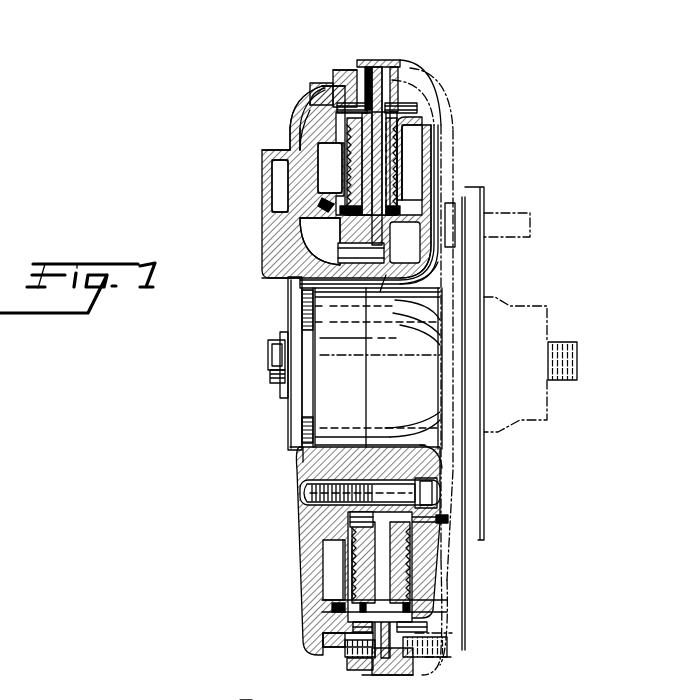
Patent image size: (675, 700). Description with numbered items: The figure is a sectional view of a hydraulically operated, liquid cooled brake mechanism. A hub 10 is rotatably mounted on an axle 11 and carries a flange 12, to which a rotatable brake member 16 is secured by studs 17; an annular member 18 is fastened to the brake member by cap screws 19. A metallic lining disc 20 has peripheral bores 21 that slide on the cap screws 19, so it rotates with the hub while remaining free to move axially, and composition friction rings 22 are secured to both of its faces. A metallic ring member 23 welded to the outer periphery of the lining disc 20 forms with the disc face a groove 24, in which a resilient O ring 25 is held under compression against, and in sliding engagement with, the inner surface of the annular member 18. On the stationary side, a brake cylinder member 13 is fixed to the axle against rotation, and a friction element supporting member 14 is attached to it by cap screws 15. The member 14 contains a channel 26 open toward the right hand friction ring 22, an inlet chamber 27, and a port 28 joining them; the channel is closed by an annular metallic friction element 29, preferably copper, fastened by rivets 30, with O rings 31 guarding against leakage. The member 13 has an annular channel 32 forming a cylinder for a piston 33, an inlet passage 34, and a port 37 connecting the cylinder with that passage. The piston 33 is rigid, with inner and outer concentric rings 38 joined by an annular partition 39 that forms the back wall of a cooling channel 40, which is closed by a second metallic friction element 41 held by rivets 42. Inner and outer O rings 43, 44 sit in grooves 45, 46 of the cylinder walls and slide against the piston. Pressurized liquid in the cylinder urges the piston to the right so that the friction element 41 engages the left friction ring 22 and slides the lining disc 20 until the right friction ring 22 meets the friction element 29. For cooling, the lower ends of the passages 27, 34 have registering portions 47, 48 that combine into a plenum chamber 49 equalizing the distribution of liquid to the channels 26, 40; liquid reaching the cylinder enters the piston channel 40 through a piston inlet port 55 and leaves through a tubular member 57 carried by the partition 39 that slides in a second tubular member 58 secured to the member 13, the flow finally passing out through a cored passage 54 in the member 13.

The hub 10 is at (510, 308).
The axle 11 is at (572, 342).
The flange 12 is at (486, 194).
The brake cylinder member 13 is at (262, 150).
The friction element supporting member 14 is at (436, 270).
The cap screws 15 is at (434, 463).
The rotatable brake member 16 is at (468, 592).
The studs 17 is at (530, 232).
The annular member 18 is at (385, 98).
The cap screws 19 is at (352, 657).
The lining disc 20 is at (394, 62).
The bores 21 is at (393, 668).
The friction rings 22 is at (396, 100).
The ring member 23 is at (343, 74).
The groove 24 is at (357, 72).
The O ring 25 is at (369, 62).
The channel 26 is at (404, 168).
The inlet chamber 27 is at (414, 254).
The port 28 is at (418, 182).
The metallic friction element 29 is at (424, 150).
The rivets 30 is at (426, 108).
The O rings 31 is at (420, 127).
The annular channel 32 is at (322, 162).
The piston 33 is at (318, 186).
The inlet passage 34 is at (325, 249).
The port 37 is at (302, 146).
The concentric rings 38 is at (302, 112).
The annular partition 39 is at (384, 562).
The channel 40 is at (336, 164).
The metallic friction element 41 is at (380, 257).
The rivets 42 is at (332, 86).
The inner O ring 43 is at (322, 205).
The outer O ring 44 is at (302, 96).
The groove 45 is at (330, 218).
The groove 46 is at (316, 96).
The registering portion 47 is at (386, 275).
The registering portion 48 is at (362, 297).
The plenum chamber 49 is at (430, 306).
The cored passage 54 is at (270, 172).
The piston inlet port 55 is at (357, 593).
The tubular member 57 is at (332, 670).
The second tubular member 58 is at (254, 693).